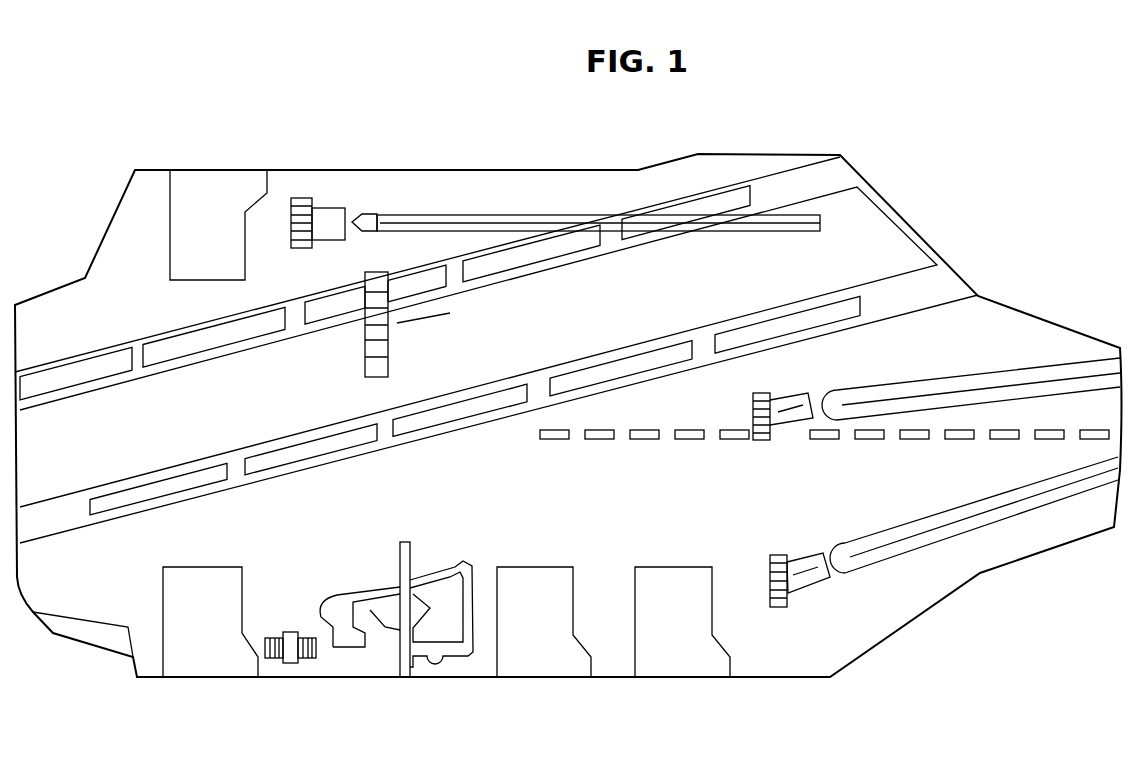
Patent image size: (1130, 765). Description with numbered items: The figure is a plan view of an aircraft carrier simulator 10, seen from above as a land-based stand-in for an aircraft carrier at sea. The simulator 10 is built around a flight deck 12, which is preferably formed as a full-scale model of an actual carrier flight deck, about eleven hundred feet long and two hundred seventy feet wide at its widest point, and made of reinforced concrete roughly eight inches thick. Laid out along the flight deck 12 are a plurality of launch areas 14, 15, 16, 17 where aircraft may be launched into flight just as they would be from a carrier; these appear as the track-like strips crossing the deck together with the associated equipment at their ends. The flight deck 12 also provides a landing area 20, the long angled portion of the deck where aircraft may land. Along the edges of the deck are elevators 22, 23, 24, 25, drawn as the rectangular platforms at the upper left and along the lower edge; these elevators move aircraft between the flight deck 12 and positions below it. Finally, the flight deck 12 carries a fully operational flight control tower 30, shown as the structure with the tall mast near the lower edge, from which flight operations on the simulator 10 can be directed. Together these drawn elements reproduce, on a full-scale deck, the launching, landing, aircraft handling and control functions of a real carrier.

The aircraft carrier simulator 10 is at (740, 118).
The flight deck 12 is at (505, 168).
The launch area 14 is at (329, 173).
The launch area 15 is at (392, 247).
The launch area 16 is at (733, 462).
The launch area 17 is at (778, 648).
The landing area 20 is at (277, 272).
The elevator 22 is at (225, 150).
The elevator 23 is at (210, 703).
The elevator 24 is at (539, 706).
The elevator 25 is at (658, 703).
The flight control tower 30 is at (403, 706).